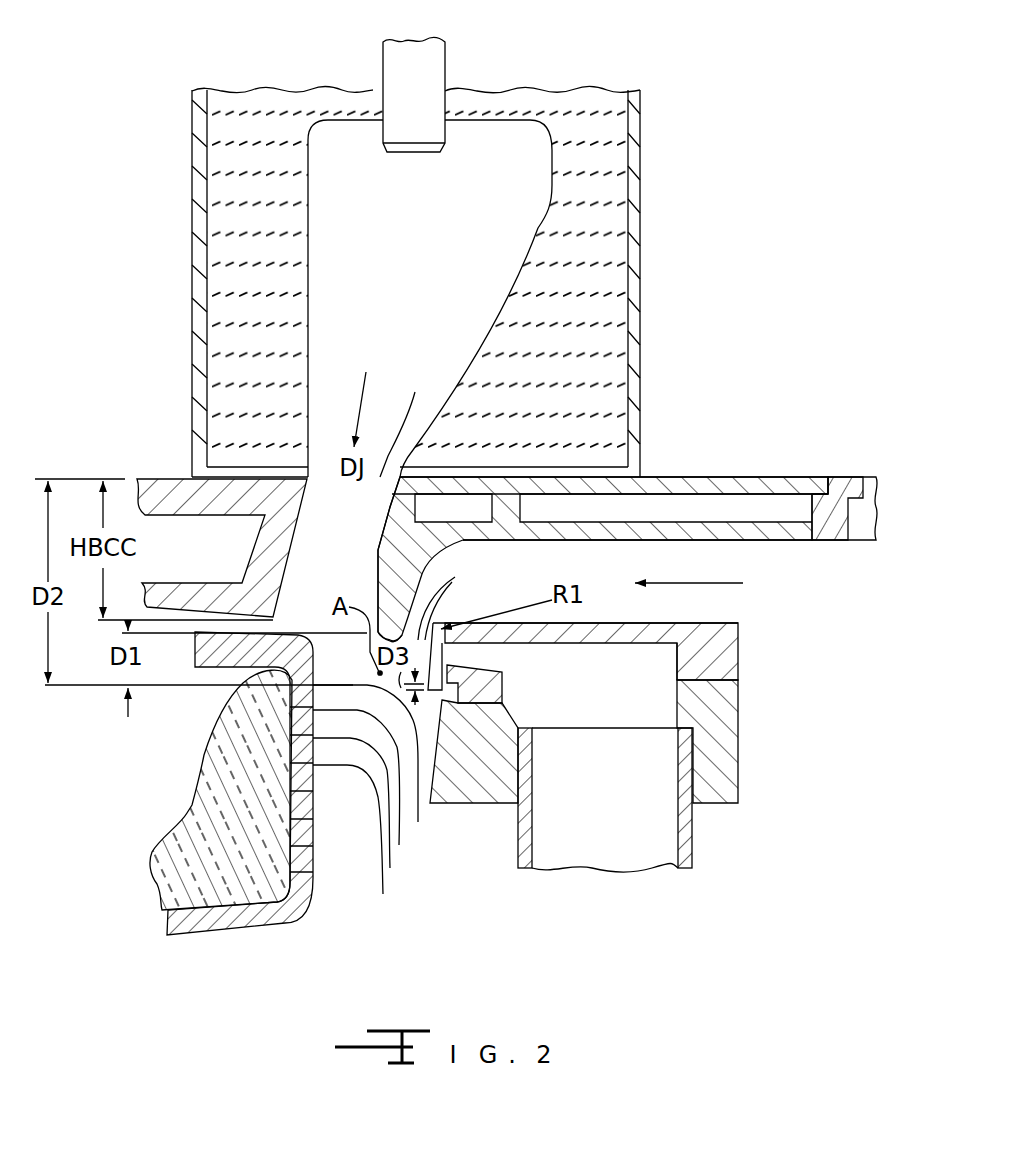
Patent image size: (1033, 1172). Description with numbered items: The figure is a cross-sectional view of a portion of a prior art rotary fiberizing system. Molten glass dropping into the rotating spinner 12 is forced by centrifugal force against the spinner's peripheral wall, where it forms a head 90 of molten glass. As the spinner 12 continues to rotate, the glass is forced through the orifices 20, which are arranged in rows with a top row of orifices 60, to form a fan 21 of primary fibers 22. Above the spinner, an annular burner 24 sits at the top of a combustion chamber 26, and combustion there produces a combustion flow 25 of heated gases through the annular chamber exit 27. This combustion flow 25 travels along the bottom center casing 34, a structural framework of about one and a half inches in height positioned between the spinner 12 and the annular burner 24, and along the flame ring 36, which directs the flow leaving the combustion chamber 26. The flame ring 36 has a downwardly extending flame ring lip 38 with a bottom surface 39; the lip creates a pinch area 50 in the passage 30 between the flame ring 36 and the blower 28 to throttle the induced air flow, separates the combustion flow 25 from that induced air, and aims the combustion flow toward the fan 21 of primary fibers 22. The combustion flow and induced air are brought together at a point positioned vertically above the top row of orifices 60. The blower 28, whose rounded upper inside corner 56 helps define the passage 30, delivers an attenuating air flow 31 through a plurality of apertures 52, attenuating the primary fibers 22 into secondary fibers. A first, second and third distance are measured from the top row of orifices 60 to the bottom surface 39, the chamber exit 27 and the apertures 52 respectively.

The spinner 12 is at (248, 827).
The orifices 20 is at (313, 822).
The fan of primary fibers 21 is at (327, 686).
The primary fibers 22 is at (423, 745).
The annular burner 24 is at (447, 57).
The combustion flow 25 is at (368, 395).
The combustion chamber 26 is at (411, 229).
The annular chamber exit 27 is at (408, 419).
The blower 28 is at (623, 747).
The passage 30 is at (627, 559).
The attenuating air flow 31 is at (452, 659).
The bottom center casing 34 is at (306, 505).
The flame ring 36 is at (388, 521).
The flame ring lip 38 is at (377, 593).
The bottom surface 39 is at (403, 627).
The pinch area 50 is at (438, 607).
The apertures 52 is at (474, 684).
The upper inside corner 56 is at (440, 617).
The top row of orifices 60 is at (221, 727).
The head of molten glass 90 is at (196, 792).